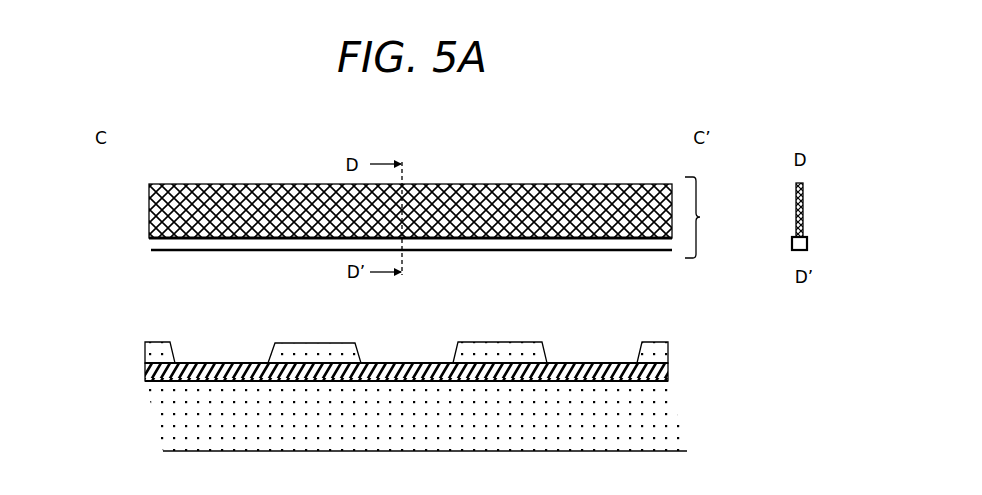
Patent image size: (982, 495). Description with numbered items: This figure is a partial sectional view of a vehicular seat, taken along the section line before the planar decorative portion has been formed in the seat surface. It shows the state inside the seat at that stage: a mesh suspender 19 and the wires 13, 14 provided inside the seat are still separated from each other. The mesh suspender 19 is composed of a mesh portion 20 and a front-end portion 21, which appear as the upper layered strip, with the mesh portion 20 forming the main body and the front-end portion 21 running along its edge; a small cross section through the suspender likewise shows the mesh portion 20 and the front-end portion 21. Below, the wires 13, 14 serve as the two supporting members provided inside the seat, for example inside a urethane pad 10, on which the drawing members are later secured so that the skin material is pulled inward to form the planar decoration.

The urethane pad 10 is at (500, 352).
The wire 13 is at (343, 383).
The wire 14 is at (148, 369).
The mesh suspender 19 is at (700, 217).
The mesh portion 20 is at (163, 199).
The front-end portion 21 is at (160, 246).